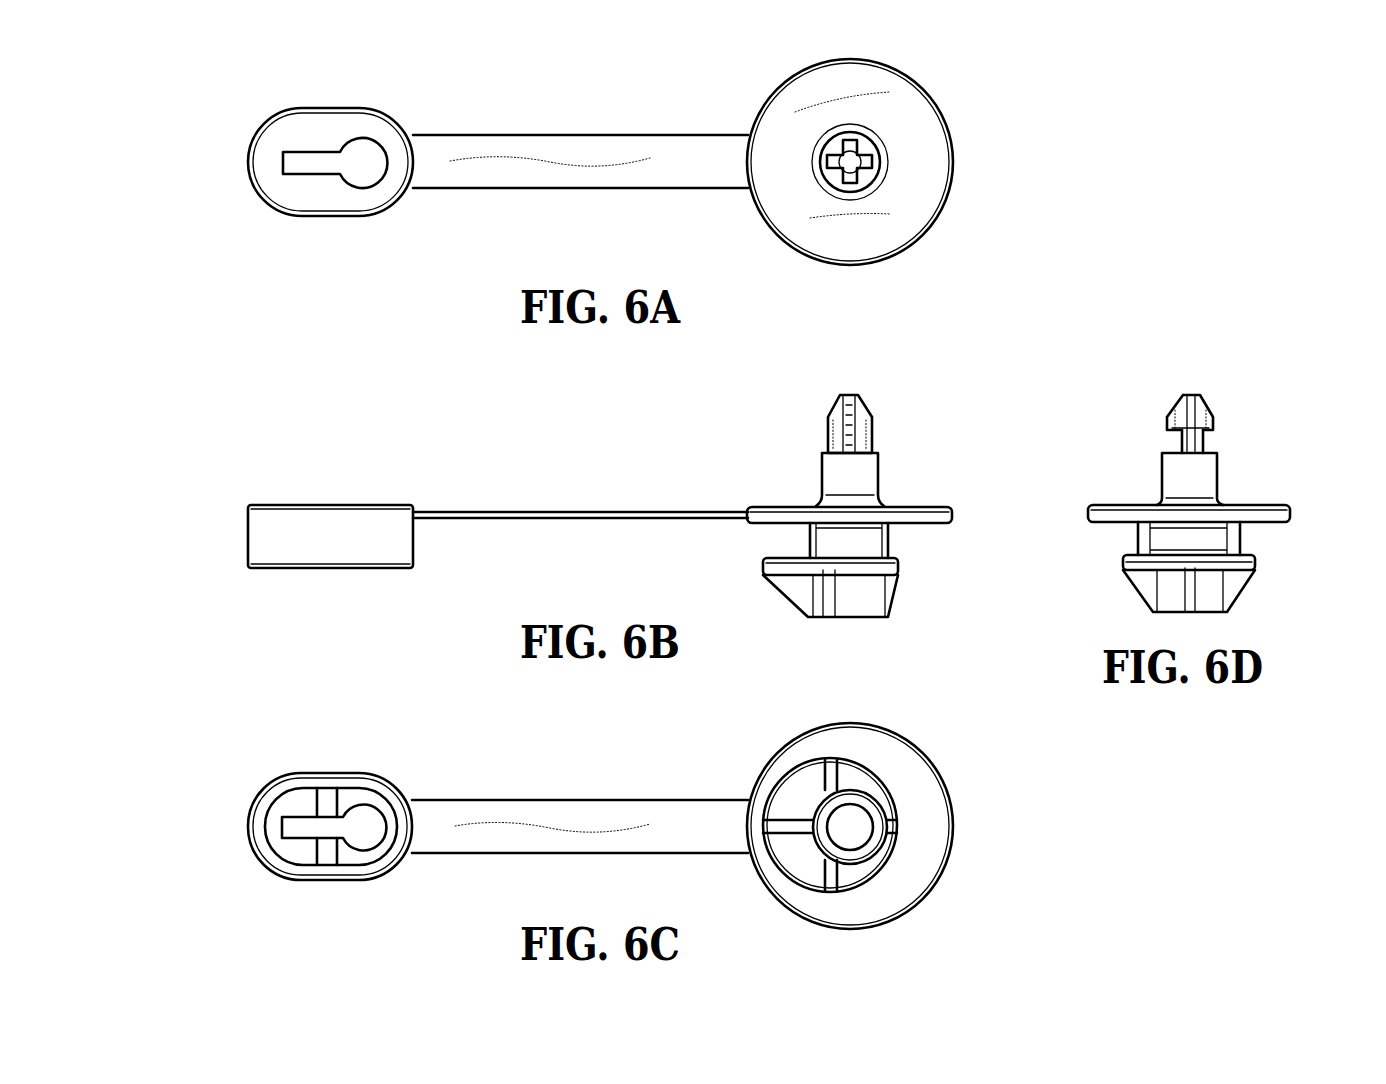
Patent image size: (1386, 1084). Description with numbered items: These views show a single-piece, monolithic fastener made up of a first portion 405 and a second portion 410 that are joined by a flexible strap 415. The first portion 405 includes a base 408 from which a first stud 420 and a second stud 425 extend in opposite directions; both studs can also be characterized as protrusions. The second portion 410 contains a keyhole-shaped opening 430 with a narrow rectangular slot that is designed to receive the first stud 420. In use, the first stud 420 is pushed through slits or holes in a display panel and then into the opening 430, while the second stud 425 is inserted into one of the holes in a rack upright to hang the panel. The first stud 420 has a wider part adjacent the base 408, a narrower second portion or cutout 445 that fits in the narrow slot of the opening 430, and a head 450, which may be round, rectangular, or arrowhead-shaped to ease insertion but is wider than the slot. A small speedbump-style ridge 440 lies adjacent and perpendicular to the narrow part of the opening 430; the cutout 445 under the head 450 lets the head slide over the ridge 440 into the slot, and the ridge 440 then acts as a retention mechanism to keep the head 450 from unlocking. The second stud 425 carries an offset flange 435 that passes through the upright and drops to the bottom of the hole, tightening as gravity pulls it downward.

In FIG. 6A, the first portion 405 is at (868, 175).
In FIG. 6B, the first portion 405 is at (841, 487).
In FIG. 6D, the first portion 405 is at (1191, 488).
In FIG. 6C, the first portion 405 is at (836, 799).
In FIG. 6A, the base 408 is at (930, 197).
In FIG. 6B, the base 408 is at (935, 503).
In FIG. 6D, the base 408 is at (1277, 503).
In FIG. 6C, the base 408 is at (937, 840).
In FIG. 6A, the second portion 410 is at (310, 224).
In FIG. 6B, the second portion 410 is at (320, 478).
In FIG. 6C, the second portion 410 is at (287, 750).
In FIG. 6A, the flexible strap 415 is at (507, 205).
In FIG. 6B, the flexible strap 415 is at (535, 463).
In FIG. 6C, the flexible strap 415 is at (563, 798).
In FIG. 6A, the first stud 420 is at (862, 152).
In FIG. 6B, the first stud 420 is at (867, 405).
In FIG. 6D, the first stud 420 is at (1192, 393).
In FIG. 6C, the first stud 420 is at (873, 807).
In FIG. 6B, the second stud 425 is at (787, 588).
In FIG. 6D, the second stud 425 is at (1248, 585).
In FIG. 6A, the opening 430 is at (363, 157).
In FIG. 6C, the opening 430 is at (365, 840).
In FIG. 6B, the offset flange 435 is at (778, 558).
In FIG. 6D, the offset flange 435 is at (1189, 562).
In FIG. 6C, the offset flange 435 is at (783, 853).
In FIG. 6C, the ridge 440 is at (328, 798).
In FIG. 6D, the cutout 445 is at (1207, 445).
In FIG. 6D, the head 450 is at (1213, 410).